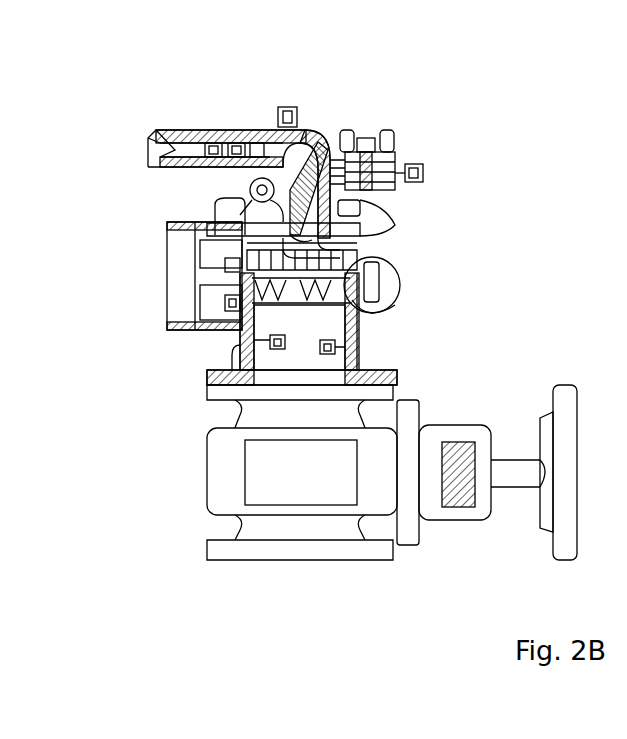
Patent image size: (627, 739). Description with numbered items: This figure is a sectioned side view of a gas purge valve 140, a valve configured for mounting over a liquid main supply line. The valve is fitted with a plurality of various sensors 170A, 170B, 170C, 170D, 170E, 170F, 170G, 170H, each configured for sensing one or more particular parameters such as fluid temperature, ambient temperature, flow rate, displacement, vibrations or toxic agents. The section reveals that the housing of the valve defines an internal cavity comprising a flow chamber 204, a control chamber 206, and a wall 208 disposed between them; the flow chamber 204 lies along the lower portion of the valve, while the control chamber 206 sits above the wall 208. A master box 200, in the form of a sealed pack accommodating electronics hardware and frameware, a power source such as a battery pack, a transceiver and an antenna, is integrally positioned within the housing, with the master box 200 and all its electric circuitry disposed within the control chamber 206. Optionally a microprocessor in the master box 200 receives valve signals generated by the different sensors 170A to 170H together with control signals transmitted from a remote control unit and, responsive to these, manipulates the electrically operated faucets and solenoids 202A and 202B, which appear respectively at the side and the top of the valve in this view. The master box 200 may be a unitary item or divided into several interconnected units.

The gas purge valve 140 is at (418, 93).
The sensor 170A is at (360, 336).
The sensor 170B is at (232, 347).
The sensor 170C is at (240, 295).
The sensor 170D is at (240, 277).
The sensor 170E is at (197, 130).
The sensor 170F is at (233, 130).
The sensor 170G is at (290, 107).
The sensor 170H is at (423, 174).
The master box 200 is at (392, 270).
The electrically operated faucet or solenoid 202A is at (455, 442).
The electrically operated faucet or solenoid 202B is at (388, 163).
The flow chamber 204 is at (273, 373).
The control chamber 206 is at (395, 297).
The wall 208 is at (400, 312).